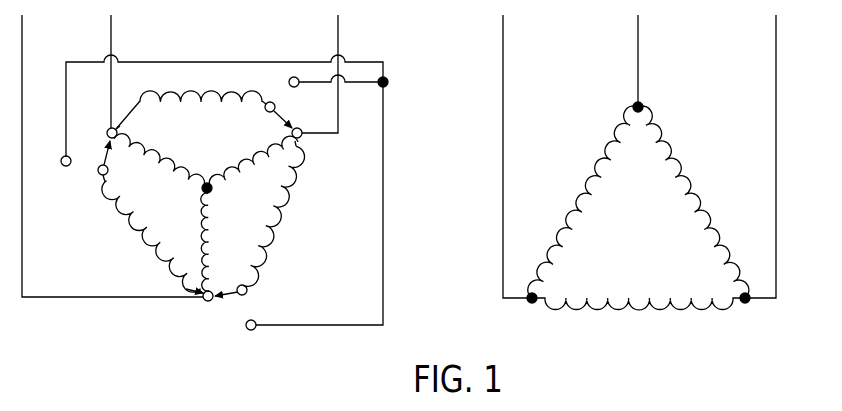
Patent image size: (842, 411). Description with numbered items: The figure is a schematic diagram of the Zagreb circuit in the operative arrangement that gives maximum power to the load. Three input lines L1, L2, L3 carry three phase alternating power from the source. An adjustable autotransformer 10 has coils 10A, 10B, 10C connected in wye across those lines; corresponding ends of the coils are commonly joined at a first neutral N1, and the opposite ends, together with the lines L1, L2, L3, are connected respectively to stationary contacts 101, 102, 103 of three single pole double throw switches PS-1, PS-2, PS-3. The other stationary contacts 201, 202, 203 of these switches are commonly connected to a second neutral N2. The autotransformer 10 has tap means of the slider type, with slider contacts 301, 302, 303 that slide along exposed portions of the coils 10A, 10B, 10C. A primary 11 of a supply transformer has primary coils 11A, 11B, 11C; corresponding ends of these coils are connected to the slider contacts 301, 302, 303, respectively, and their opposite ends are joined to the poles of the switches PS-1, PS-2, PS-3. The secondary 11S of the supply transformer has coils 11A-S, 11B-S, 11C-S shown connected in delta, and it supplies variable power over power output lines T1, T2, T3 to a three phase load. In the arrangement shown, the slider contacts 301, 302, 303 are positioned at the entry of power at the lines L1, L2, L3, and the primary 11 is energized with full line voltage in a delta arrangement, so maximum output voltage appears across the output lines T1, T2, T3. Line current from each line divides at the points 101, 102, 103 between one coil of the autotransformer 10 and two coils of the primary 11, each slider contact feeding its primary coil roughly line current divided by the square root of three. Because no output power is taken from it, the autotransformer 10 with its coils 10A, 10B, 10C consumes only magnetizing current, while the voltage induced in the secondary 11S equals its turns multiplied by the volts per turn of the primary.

The adjustable autotransformer 10 is at (206, 207).
The autotransformer coil 10A is at (195, 245).
The autotransformer coil 10B is at (167, 147).
The autotransformer coil 10C is at (257, 165).
The primary of supply transformer 11 is at (198, 184).
The primary coil 11A is at (134, 243).
The primary coil 11B is at (235, 96).
The primary coil 11C is at (300, 212).
The first neutral N1 is at (204, 177).
The second neutral N2 is at (393, 72).
The stationary contact 101 is at (200, 305).
The stationary contact 102 is at (116, 126).
The stationary contact 103 is at (306, 142).
The stationary contact 201 is at (259, 333).
The stationary contact 202 is at (78, 168).
The stationary contact 203 is at (283, 75).
The slider contact 301 is at (175, 290).
The slider contact 302 is at (123, 130).
The slider contact 303 is at (296, 147).
The single pole double throw switch PS-1 is at (237, 313).
The single pole double throw switch PS-2 is at (87, 144).
The single pole double throw switch PS-3 is at (309, 112).
The input line L1 is at (112, 156).
The input line L2 is at (126, 71).
The input line L3 is at (335, 74).
The power output line T1 is at (520, 159).
The power output line T2 is at (650, 63).
The power output line T3 is at (772, 159).
The secondary of supply transformer 11S is at (640, 222).
The secondary coil 11A-S is at (564, 222).
The secondary coil 11B-S is at (703, 311).
The secondary coil 11C-S is at (708, 210).